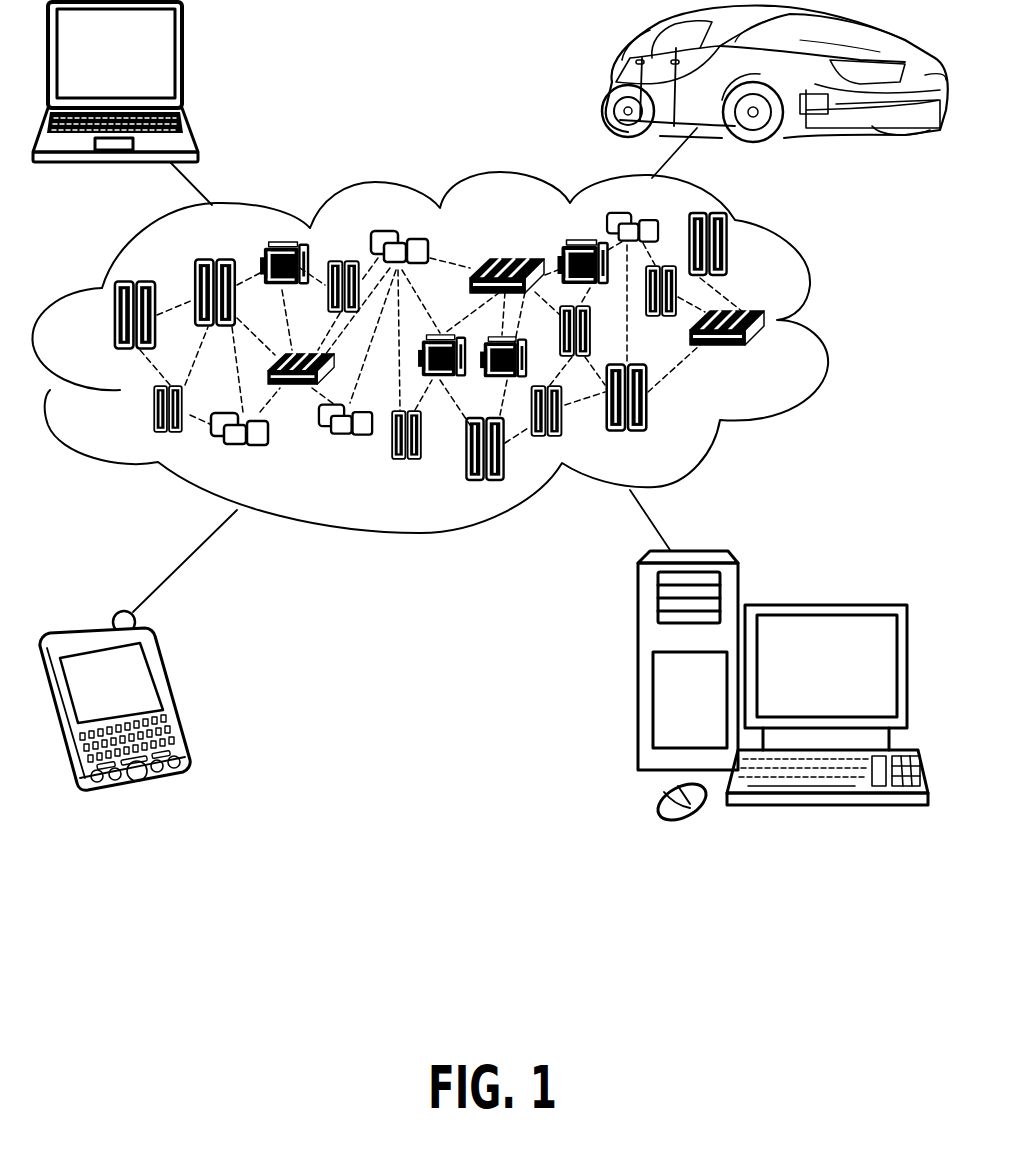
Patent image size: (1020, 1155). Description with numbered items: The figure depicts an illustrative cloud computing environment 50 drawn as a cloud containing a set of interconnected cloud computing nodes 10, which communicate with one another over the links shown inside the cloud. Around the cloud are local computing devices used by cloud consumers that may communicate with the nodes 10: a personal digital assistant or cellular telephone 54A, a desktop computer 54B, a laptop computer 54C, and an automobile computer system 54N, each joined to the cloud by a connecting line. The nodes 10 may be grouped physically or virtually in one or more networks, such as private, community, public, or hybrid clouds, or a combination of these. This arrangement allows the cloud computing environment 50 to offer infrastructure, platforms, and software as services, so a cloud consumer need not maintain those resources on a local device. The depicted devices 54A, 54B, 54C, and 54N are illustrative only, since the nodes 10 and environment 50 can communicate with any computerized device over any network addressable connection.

The cloud computing nodes 10 is at (489, 414).
The cloud computing environment 50 is at (828, 328).
The personal digital assistant (PDA) or cellular telephone 54A is at (170, 697).
The desktop computer 54B is at (823, 605).
The laptop computer 54C is at (183, 62).
The automobile computer system 54N is at (610, 79).